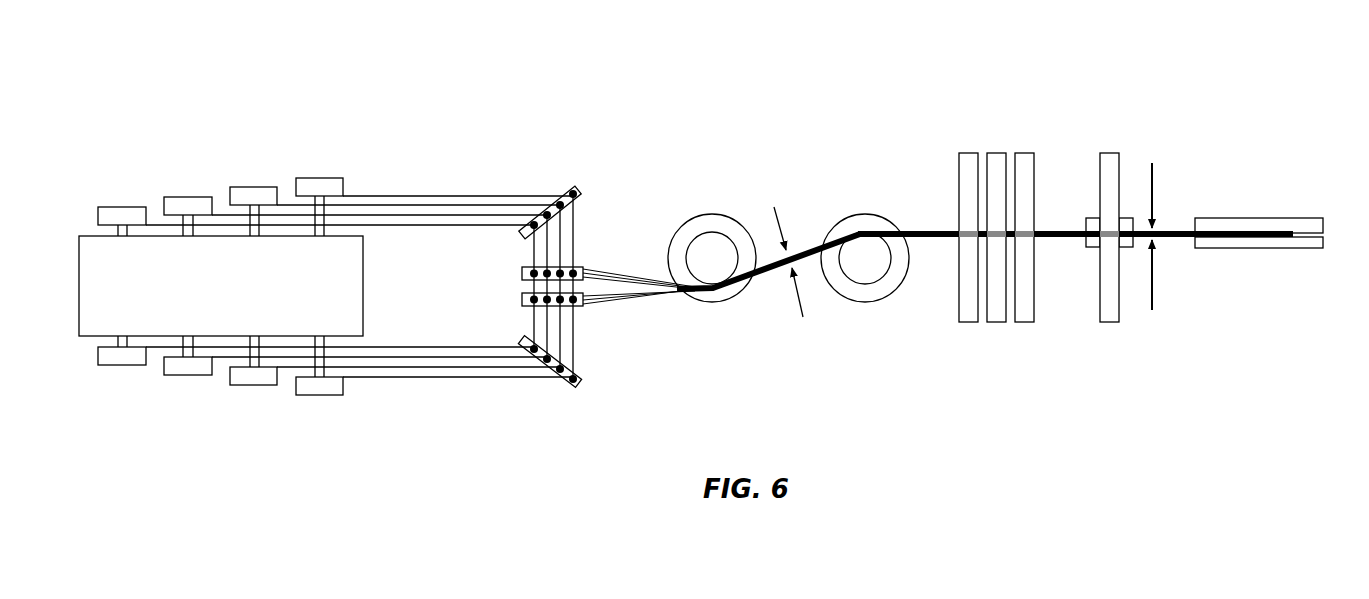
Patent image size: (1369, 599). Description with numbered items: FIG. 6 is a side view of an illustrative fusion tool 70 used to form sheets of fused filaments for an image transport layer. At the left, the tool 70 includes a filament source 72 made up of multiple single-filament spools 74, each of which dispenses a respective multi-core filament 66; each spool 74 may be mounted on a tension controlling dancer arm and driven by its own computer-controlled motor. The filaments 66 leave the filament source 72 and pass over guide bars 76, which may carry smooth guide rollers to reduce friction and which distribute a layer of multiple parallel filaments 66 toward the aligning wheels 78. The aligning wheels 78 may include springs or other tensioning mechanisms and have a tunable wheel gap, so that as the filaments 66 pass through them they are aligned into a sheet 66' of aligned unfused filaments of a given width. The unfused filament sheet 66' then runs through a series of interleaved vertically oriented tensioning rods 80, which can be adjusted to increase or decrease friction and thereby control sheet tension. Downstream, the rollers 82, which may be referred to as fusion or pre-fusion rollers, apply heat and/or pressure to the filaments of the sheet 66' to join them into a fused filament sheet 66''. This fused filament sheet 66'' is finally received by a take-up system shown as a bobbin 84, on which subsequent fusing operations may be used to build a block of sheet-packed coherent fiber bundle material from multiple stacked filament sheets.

The tool 70 is at (908, 90).
The filament source 72 is at (507, 140).
The single-filament spools 74 is at (258, 385).
The guide bars 76 is at (592, 140).
The aligning wheels 78 is at (910, 140).
The tensioning rods 80 is at (1040, 140).
The rollers 82 is at (1163, 140).
The bobbin 84 is at (1202, 140).
The multi-core filament 66 is at (359, 315).
The sheet of aligned unfused filaments 66' is at (1004, 261).
The fused filament sheet 66'' is at (1221, 261).